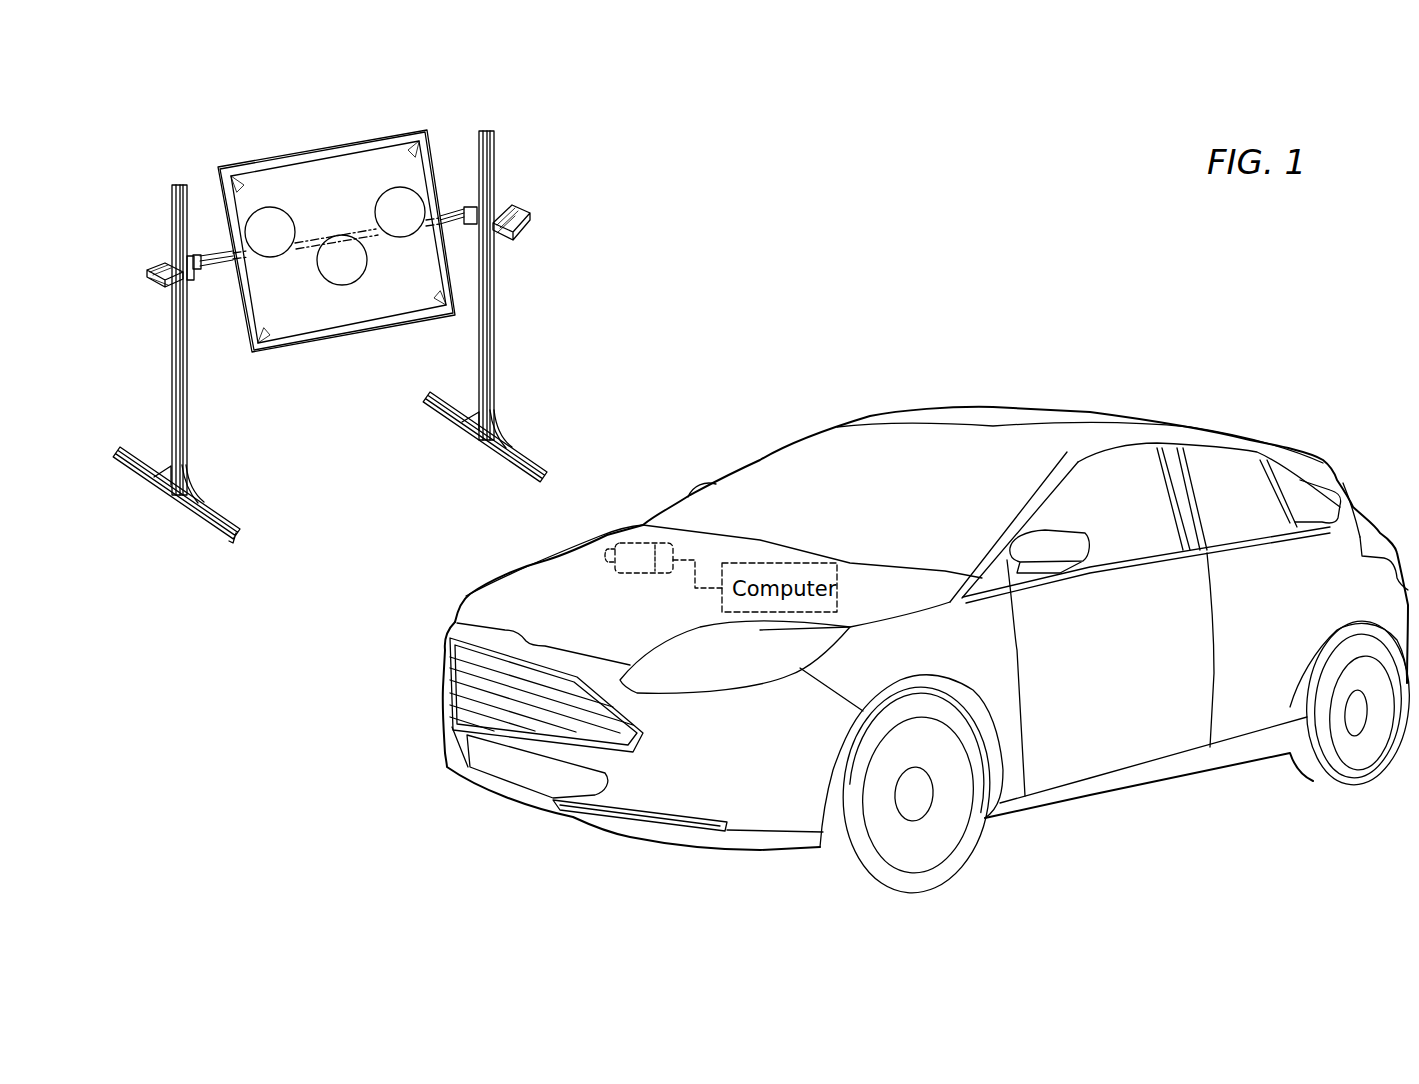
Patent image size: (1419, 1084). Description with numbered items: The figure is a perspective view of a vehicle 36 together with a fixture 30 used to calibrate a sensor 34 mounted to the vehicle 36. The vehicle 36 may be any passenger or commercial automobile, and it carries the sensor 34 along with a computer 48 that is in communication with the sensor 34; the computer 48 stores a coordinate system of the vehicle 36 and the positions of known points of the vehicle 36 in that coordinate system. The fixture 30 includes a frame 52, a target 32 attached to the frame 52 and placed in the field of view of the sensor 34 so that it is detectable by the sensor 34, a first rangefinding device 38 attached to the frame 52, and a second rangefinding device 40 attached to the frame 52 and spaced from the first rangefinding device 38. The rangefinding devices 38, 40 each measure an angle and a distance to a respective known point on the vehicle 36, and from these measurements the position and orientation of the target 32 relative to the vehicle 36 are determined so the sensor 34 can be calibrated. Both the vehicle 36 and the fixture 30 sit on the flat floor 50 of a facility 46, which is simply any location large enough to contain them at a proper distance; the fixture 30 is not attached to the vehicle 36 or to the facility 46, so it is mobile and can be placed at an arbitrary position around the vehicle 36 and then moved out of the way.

The fixture 30 is at (518, 146).
The target 32 is at (272, 154).
The sensor 34 is at (643, 573).
The vehicle 36 is at (1248, 438).
The first rangefinding device 38 is at (167, 268).
The second rangefinding device 40 is at (516, 206).
The facility 46 is at (776, 237).
The computer 48 is at (826, 560).
The floor 50 is at (383, 698).
The frame 52 is at (496, 343).